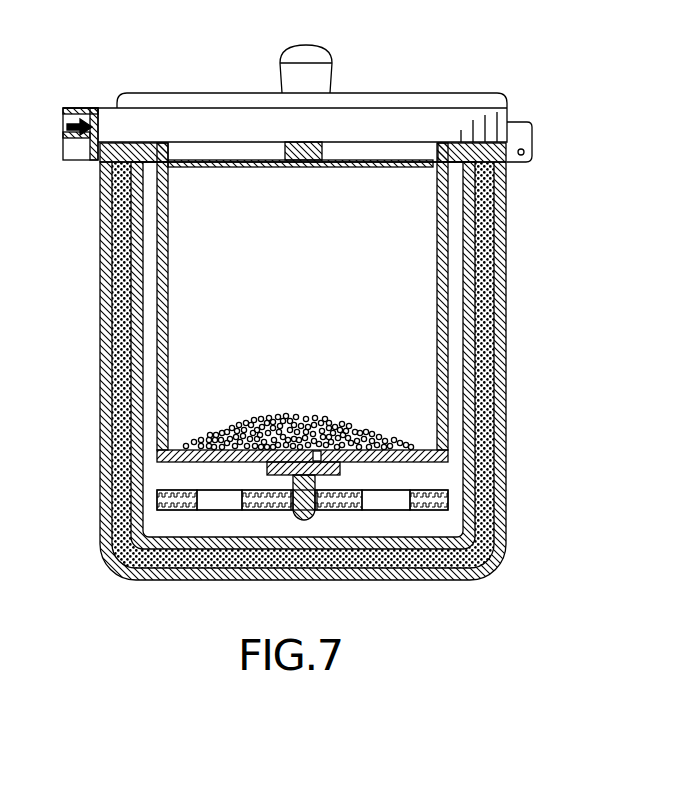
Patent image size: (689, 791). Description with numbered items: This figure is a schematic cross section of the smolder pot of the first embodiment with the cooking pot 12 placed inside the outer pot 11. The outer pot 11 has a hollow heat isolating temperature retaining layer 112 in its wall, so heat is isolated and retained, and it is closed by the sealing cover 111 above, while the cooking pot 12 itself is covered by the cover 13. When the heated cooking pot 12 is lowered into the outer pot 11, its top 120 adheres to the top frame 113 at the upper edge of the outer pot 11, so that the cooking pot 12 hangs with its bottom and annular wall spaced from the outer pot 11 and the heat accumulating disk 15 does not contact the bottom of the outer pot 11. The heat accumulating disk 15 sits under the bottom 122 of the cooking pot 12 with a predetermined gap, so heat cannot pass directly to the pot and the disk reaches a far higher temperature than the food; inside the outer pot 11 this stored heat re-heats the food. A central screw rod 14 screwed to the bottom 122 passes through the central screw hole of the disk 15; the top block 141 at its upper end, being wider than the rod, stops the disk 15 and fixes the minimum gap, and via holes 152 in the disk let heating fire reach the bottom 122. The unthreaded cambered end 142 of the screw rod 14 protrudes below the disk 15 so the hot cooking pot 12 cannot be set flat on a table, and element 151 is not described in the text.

The outer pot 11 is at (503, 243).
The sealing cover 111 is at (460, 100).
The heat isolating temperature retaining layer 112 is at (490, 308).
The top frame 113 is at (116, 101).
The cooking pot 12 is at (447, 392).
The top of the cooking pot 120 is at (152, 150).
The bottom of the cooking pot 122 is at (425, 452).
The cover 13 is at (317, 147).
The central screw rod 14 is at (320, 476).
The top block 141 is at (318, 462).
The cambered end 142 is at (311, 512).
The heat accumulating disk 15 is at (447, 497).
The through hole 151 is at (292, 485).
The via holes 152 is at (208, 498).